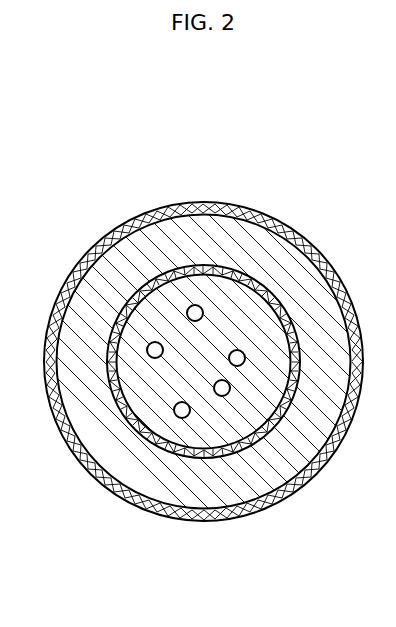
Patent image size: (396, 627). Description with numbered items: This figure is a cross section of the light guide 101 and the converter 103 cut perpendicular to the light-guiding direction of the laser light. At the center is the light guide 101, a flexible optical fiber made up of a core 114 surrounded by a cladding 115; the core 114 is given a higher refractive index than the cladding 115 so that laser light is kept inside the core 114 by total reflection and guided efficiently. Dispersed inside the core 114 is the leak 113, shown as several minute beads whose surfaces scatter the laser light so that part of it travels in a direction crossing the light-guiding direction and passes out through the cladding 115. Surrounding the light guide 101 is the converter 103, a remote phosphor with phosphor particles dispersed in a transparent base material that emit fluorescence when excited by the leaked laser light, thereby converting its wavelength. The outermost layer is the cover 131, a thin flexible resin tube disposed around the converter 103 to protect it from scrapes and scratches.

The light guide 101 is at (158, 151).
The converter 103 is at (270, 247).
The leak 113 is at (183, 418).
The core 114 is at (178, 293).
The cladding 115 is at (221, 272).
The cover 131 is at (318, 244).